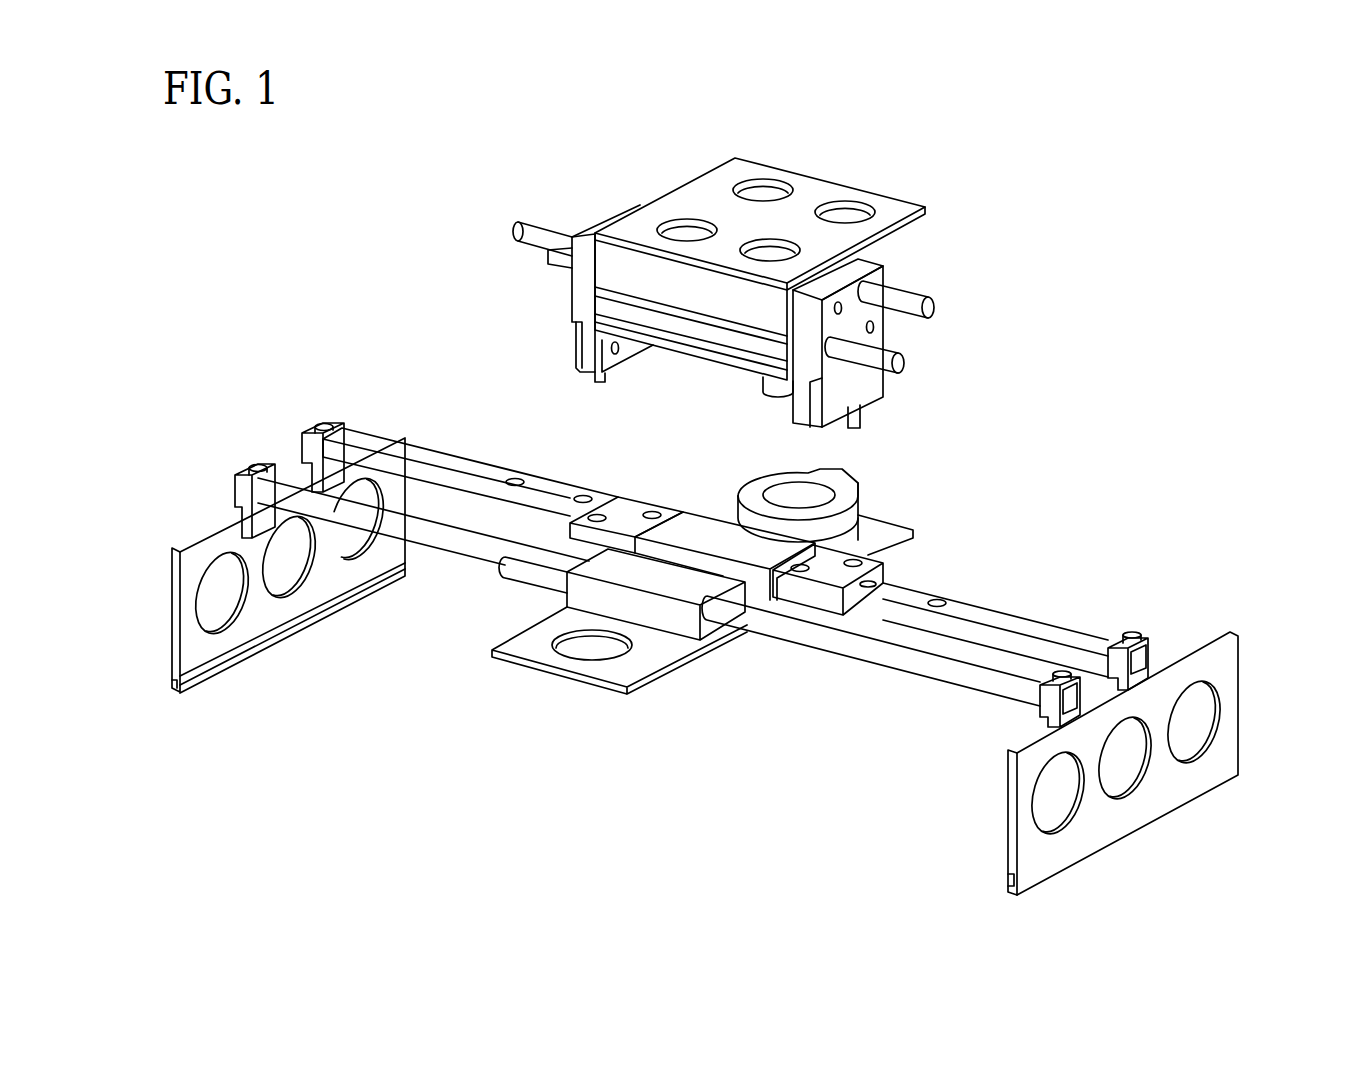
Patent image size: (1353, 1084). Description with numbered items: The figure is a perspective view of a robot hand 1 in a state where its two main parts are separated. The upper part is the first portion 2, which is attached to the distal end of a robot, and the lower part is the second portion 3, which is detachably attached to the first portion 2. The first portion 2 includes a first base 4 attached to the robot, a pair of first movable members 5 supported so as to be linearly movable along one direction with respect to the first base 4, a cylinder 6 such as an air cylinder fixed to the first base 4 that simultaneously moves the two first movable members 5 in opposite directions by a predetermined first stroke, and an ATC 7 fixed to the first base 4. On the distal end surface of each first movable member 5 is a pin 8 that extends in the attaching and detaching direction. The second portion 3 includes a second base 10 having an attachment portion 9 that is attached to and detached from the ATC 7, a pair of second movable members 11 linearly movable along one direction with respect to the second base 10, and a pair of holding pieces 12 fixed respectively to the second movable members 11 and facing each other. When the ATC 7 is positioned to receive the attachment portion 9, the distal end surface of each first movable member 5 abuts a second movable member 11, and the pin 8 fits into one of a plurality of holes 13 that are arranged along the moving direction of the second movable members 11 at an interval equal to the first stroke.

The robot hand 1 is at (378, 207).
The first portion 2 is at (660, 182).
The second portion 3 is at (265, 450).
The first base 4 is at (815, 188).
The first movable members 5 is at (583, 296).
The cylinder 6 is at (667, 320).
The ATC 7 is at (763, 385).
The pin 8 is at (594, 377).
The attachment portion 9 is at (757, 478).
The second base 10 is at (657, 667).
The second movable members 11 is at (418, 457).
The holding pieces 12 is at (193, 648).
The holes 13 is at (515, 480).